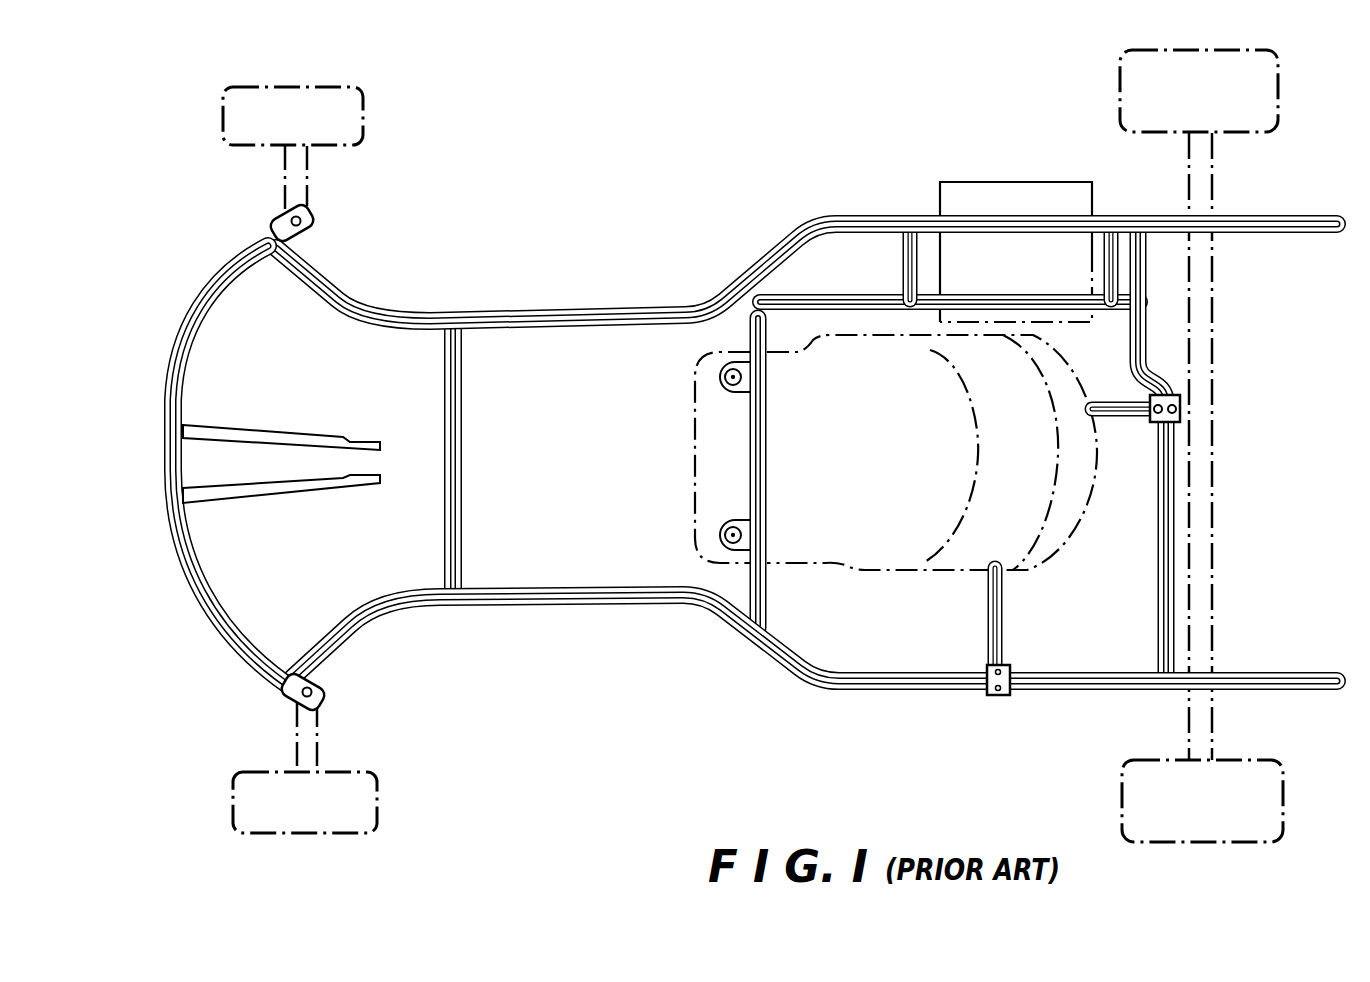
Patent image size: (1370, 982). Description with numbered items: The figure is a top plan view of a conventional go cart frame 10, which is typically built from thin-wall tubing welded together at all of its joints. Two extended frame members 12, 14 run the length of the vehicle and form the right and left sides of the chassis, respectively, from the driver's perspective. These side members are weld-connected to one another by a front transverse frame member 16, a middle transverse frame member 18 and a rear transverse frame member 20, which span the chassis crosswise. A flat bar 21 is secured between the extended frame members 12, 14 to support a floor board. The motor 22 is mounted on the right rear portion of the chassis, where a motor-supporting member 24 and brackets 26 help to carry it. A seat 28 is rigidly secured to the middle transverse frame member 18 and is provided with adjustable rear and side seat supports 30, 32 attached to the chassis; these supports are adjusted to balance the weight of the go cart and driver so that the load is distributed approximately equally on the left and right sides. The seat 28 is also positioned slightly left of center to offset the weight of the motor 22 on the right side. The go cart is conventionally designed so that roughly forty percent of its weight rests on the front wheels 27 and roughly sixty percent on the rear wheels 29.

The go cart frame 10 is at (755, 431).
The extended frame member 12 is at (560, 283).
The extended frame member 14 is at (603, 606).
The front transverse frame member 16 is at (196, 347).
The middle transverse frame member 18 is at (755, 333).
The rear transverse frame member 20 is at (1143, 351).
The flat bar 21 is at (463, 398).
The motor 22 is at (1048, 140).
The motor-supporting member 24 is at (843, 302).
The brackets 26 is at (922, 270).
The front wheels 27 is at (354, 87).
The seat 28 is at (695, 470).
The rear wheels 29 is at (1120, 52).
The rear seat support 30 is at (1133, 422).
The side seat support 32 is at (988, 616).